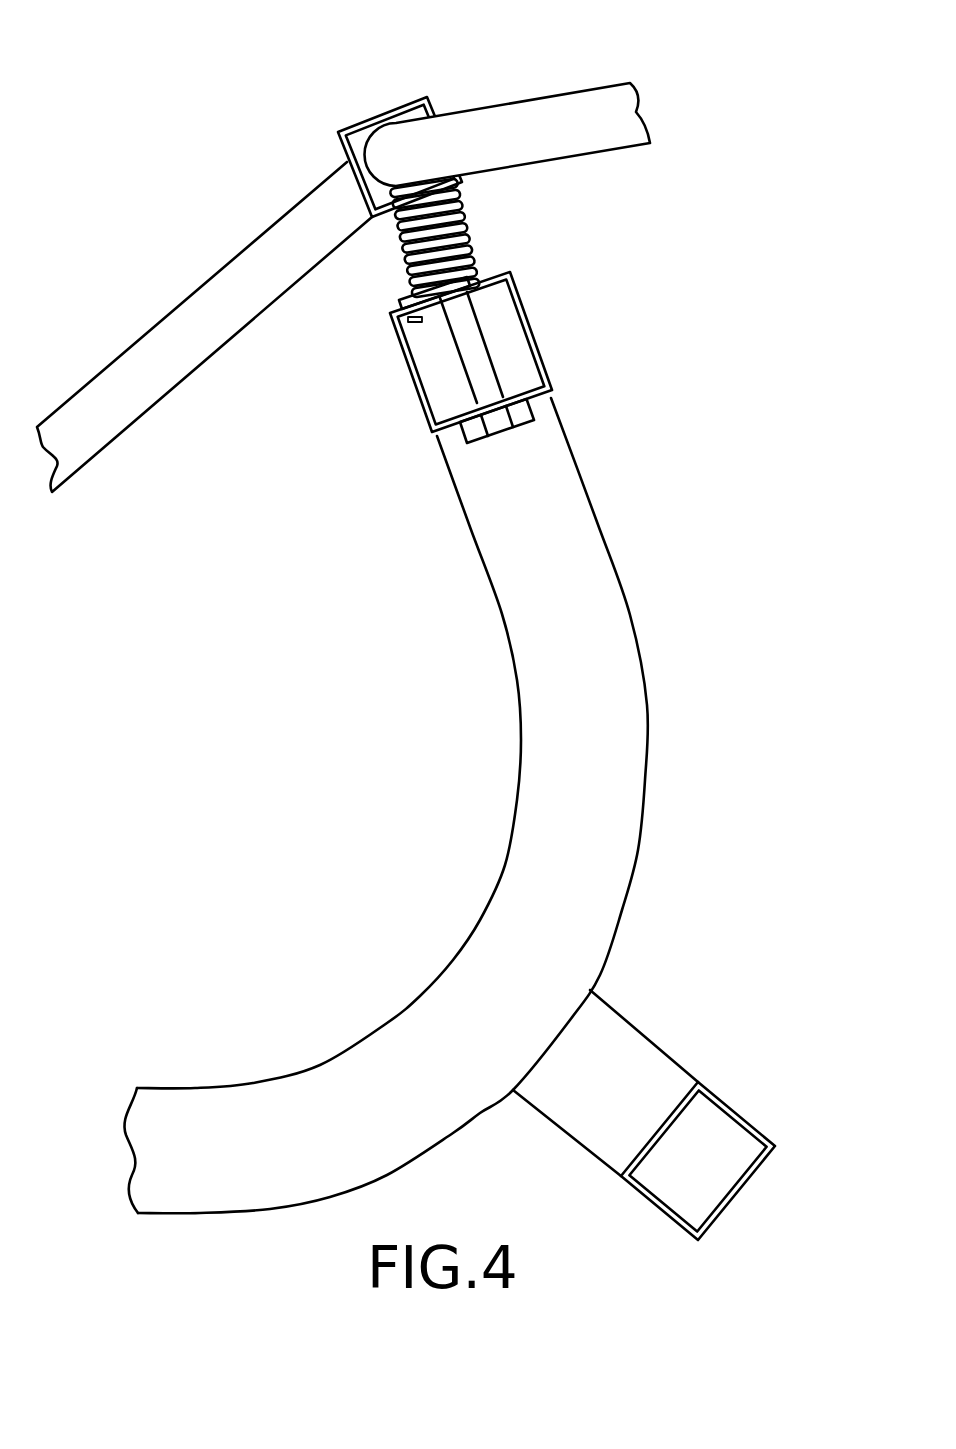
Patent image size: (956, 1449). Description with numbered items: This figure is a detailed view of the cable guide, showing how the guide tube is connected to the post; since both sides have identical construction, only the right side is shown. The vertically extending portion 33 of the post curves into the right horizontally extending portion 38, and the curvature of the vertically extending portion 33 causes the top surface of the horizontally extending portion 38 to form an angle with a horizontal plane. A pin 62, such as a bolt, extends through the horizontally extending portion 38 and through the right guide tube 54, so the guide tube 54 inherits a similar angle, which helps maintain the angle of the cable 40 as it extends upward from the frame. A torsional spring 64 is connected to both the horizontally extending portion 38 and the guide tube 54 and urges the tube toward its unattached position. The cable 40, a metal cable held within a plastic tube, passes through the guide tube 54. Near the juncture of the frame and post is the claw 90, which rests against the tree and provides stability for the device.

The vertically extending post 33 is at (620, 732).
The horizontally extending portion 38 is at (533, 327).
The cable 40 is at (557, 115).
The right guide tube 54 is at (380, 118).
The pin 62 is at (462, 367).
The torsional spring 64 is at (468, 232).
The claw 90 is at (717, 1090).